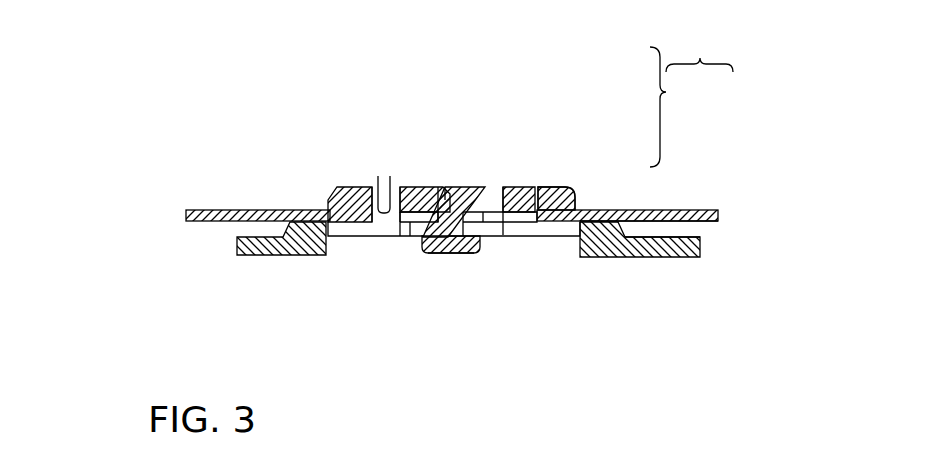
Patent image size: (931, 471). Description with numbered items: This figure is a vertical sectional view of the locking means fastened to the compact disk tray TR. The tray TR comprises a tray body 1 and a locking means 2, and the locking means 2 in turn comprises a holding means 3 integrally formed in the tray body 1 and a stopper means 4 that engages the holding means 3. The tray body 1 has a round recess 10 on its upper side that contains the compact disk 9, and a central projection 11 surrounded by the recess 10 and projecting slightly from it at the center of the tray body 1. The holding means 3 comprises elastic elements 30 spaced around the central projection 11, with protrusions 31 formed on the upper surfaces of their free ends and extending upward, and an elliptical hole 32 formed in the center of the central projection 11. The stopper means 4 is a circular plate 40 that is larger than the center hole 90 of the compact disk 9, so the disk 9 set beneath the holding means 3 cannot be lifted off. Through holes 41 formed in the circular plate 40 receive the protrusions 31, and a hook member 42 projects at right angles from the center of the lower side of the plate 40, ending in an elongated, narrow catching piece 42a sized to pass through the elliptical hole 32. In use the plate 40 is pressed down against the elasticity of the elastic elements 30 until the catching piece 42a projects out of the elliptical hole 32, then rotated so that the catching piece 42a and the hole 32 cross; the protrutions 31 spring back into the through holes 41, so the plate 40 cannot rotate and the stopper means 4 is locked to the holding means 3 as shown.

The compact disk 9 is at (237, 212).
The round recess 10 is at (683, 237).
The elastic elements 30 is at (333, 192).
The protrusions 31 is at (389, 192).
The center hole 90 is at (380, 200).
The through holes 41 is at (403, 196).
The elliptical hole 32 is at (439, 204).
The circular plate 40 is at (492, 197).
The hook member 42 is at (467, 221).
The catching piece 42a is at (453, 254).
The holding means 3 is at (601, 212).
The stopper means 4 is at (566, 193).
The central projection 11 is at (608, 207).
The tray body 1 is at (687, 222).
The locking means 2 is at (666, 107).
The compact disk tray TR is at (699, 44).